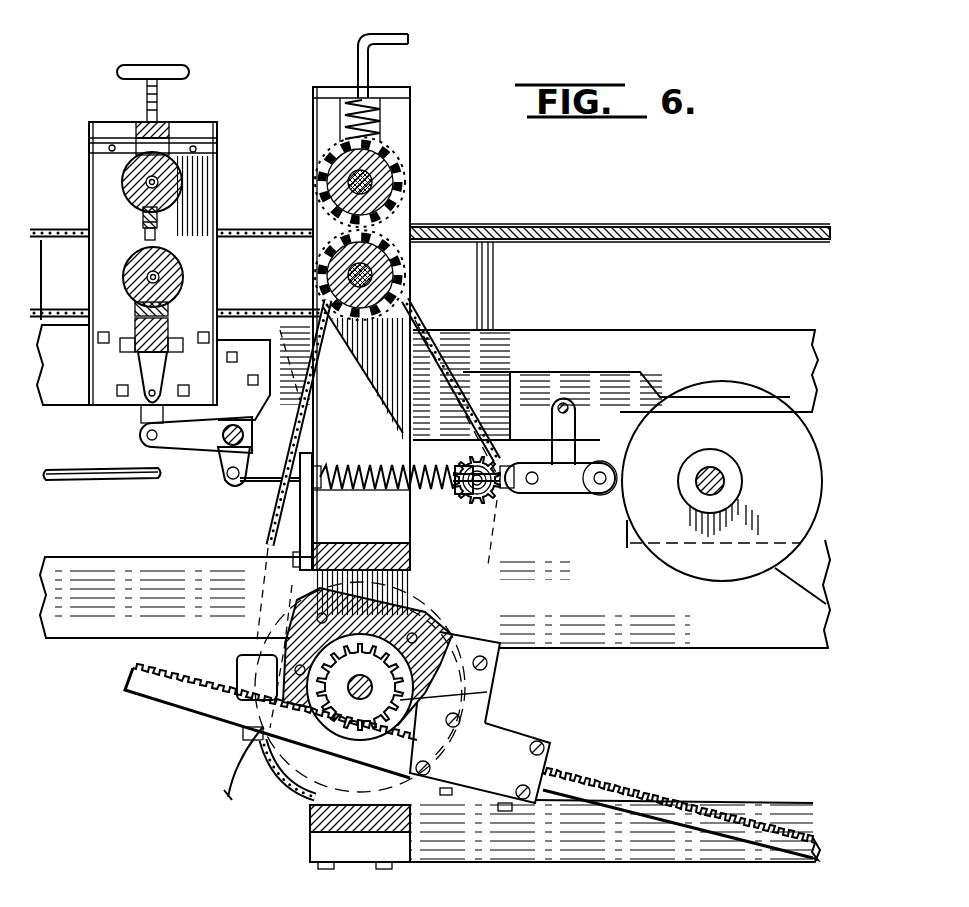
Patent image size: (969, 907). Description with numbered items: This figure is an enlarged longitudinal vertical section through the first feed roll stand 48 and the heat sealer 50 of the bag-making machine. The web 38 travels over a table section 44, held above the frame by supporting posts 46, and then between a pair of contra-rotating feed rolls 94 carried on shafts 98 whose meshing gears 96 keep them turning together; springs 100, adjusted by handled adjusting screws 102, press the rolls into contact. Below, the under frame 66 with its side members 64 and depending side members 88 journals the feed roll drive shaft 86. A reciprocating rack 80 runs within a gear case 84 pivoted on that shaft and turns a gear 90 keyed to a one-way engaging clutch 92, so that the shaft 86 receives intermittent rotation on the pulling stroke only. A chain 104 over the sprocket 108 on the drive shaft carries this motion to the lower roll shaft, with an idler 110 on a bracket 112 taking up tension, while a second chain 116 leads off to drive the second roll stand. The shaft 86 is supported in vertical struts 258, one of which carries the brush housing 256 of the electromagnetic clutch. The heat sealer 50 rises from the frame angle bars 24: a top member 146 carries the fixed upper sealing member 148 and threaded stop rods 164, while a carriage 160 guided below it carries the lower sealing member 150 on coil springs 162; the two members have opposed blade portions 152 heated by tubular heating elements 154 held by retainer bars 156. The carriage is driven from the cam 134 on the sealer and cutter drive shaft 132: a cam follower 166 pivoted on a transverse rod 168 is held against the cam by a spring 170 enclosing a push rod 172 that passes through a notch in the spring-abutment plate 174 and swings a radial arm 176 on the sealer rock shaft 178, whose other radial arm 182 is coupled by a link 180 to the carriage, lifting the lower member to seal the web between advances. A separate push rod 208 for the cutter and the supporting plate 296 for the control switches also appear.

The angle bars 24 is at (720, 330).
The web 38 is at (410, 228).
The table section 44 is at (628, 240).
The supporting posts 46 is at (496, 290).
The first feed roll stand 48 is at (336, 51).
The heat sealer 50 is at (84, 102).
The side members 64 is at (805, 585).
The under frame 66 is at (574, 838).
The rack 80 is at (622, 790).
The gear case 84 is at (496, 682).
The feed roll drive shaft 86 is at (360, 700).
The side members 88 is at (448, 468).
The gear 90 is at (490, 698).
The one-way engaging clutch 92 is at (498, 652).
The feed rolls 94 is at (392, 172).
The meshing gears 96 is at (408, 178).
The shafts 98 is at (385, 165).
The springs 100 is at (350, 120).
The adjusting screws 102 is at (400, 34).
The chain 104 is at (274, 530).
The sprocket 108 is at (492, 542).
The idler 110 is at (468, 508).
The bracket 112 is at (418, 495).
The chain 116 is at (266, 312).
The sealer and cutter drive shaft 132 is at (696, 472).
The cam 134 is at (636, 500).
The top member 146 is at (170, 123).
The upper sealing member 148 is at (162, 186).
The lower sealing member 150 is at (124, 280).
The blade portions 152 is at (148, 250).
The heating elements 154 is at (160, 192).
The retainer bars 156 is at (165, 180).
The carriage 160 is at (140, 400).
The coil springs 162 is at (136, 322).
The stop rods 164 is at (149, 112).
The cam follower 166 is at (554, 490).
The transverse rod 168 is at (566, 405).
The spring 170 is at (346, 466).
The push rod 172 is at (303, 462).
The spring-abutment plate 174 is at (308, 515).
The radial arm 176 is at (228, 470).
The sealer rock shaft 178 is at (225, 445).
The link 180 is at (140, 432).
The radial arm 182 is at (176, 452).
The push rod 208 is at (80, 482).
The brush housing 256 is at (238, 672).
The vertical struts 258 is at (305, 785).
The supporting plate 296 is at (628, 540).